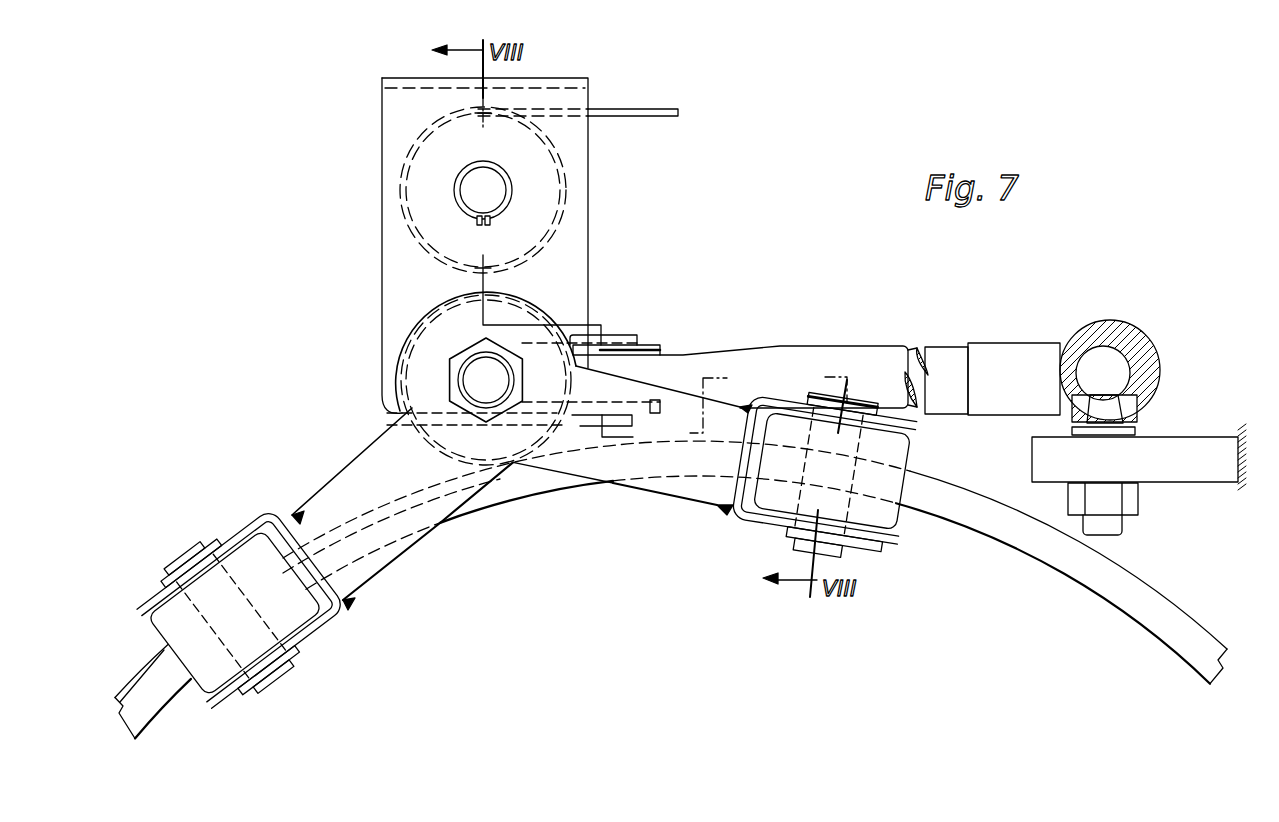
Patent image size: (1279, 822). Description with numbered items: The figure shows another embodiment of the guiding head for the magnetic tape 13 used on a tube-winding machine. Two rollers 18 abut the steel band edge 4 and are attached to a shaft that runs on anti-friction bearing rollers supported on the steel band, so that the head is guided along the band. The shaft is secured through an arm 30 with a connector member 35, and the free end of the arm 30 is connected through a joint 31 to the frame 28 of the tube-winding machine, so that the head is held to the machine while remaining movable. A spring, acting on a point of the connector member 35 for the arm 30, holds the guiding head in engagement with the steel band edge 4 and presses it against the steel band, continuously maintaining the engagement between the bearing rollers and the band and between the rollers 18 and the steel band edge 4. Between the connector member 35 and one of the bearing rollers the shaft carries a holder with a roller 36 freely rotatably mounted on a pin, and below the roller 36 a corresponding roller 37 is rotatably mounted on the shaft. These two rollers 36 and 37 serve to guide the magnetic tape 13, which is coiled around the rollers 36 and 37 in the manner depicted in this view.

The steel band edge 4 is at (533, 492).
The magnetic tape 13 is at (662, 117).
The rollers 18 is at (248, 556).
The frame 28 is at (1237, 433).
The arm 30 is at (863, 352).
The joint 31 is at (1095, 330).
The connector member 35 is at (650, 343).
The roller 36 is at (558, 185).
The roller 37 is at (410, 365).